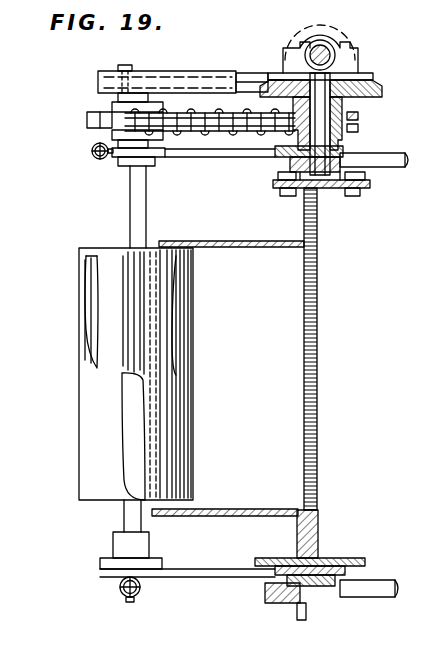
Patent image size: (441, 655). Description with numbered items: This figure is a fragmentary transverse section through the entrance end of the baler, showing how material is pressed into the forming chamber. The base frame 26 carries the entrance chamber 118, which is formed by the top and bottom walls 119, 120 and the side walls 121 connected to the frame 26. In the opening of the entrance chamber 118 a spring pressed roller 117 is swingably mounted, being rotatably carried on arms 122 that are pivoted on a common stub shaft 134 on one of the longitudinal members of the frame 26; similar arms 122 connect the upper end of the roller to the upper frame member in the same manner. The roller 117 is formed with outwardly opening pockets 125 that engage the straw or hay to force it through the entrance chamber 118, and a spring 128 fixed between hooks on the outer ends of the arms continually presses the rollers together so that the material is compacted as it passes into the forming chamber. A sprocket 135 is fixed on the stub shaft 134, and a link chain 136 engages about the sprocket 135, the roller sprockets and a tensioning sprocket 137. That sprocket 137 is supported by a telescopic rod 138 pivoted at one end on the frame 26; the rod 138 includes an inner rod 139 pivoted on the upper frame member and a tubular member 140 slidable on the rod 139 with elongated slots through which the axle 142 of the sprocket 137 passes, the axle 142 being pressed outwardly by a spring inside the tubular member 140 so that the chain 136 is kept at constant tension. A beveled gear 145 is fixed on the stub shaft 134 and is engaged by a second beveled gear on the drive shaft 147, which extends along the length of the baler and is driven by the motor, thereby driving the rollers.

The base frame 26 is at (316, 534).
The spring pressed roller 117 is at (80, 478).
The entrance chamber 118 is at (261, 284).
The top wall 119 is at (232, 240).
The bottom wall 120 is at (221, 510).
The side wall 121 is at (284, 358).
The arm 122 is at (212, 160).
The outwardly opening pocket 125 is at (90, 345).
The spring 128 is at (101, 160).
The stub shaft 134 is at (348, 112).
The sprocket 135 is at (360, 117).
The link chain 136 is at (358, 130).
The sprocket 137 is at (100, 128).
The telescopic rod 138 is at (234, 74).
The inner rod 139 is at (262, 76).
The tubular member 140 is at (188, 62).
The axle 142 is at (125, 66).
The beveled gear 145 is at (375, 88).
The drive shaft 147 is at (322, 52).